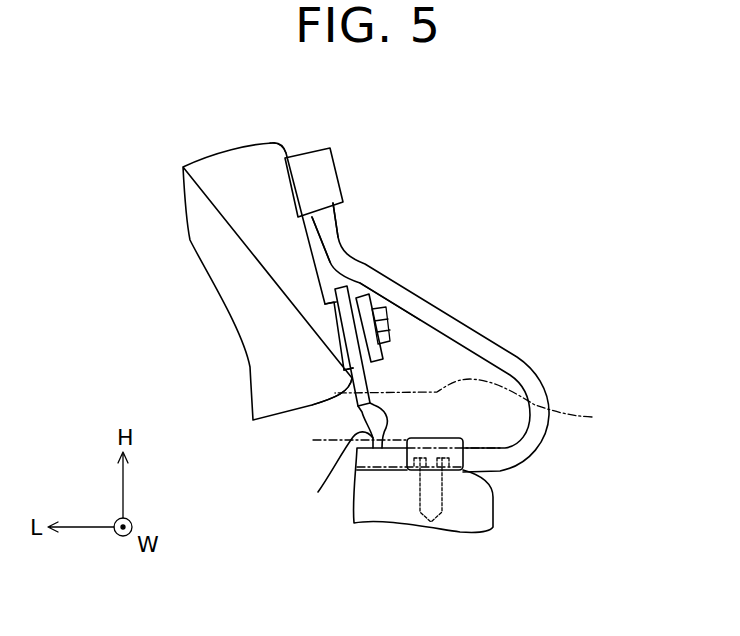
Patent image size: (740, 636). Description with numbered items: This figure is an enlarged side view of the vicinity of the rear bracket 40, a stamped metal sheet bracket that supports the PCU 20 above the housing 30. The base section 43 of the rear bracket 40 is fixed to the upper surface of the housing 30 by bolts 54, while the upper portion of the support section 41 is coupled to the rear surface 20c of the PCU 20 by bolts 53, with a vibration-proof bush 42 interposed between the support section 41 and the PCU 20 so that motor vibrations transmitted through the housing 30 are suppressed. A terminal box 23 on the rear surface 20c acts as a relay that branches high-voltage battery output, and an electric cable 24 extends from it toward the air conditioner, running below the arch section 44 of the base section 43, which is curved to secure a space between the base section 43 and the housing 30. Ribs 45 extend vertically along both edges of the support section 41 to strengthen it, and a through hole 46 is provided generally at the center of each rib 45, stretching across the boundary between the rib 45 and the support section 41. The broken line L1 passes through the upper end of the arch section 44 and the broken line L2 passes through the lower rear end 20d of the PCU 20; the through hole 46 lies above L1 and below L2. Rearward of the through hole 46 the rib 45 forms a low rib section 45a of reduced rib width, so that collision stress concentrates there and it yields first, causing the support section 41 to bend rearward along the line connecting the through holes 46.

The PCU 20 is at (225, 168).
The rear surface of the PCU 20c is at (294, 139).
The lower rear end of the PCU 20d is at (328, 384).
The terminal box 23 is at (328, 177).
The electric cable 24 is at (330, 225).
The housing 30 is at (483, 513).
The rear bracket 40 is at (405, 359).
The support section 41 is at (350, 398).
The vibration-proof bush 42 is at (365, 298).
The base section 43 is at (407, 465).
The arch section 44 is at (453, 438).
The ribs 45 is at (390, 396).
The low rib section 45a is at (420, 430).
The through hole 46 is at (367, 431).
The bolts 53 is at (386, 325).
The bolts 54 is at (432, 493).
The broken line L1 is at (313, 440).
The broken line L2 is at (478, 404).